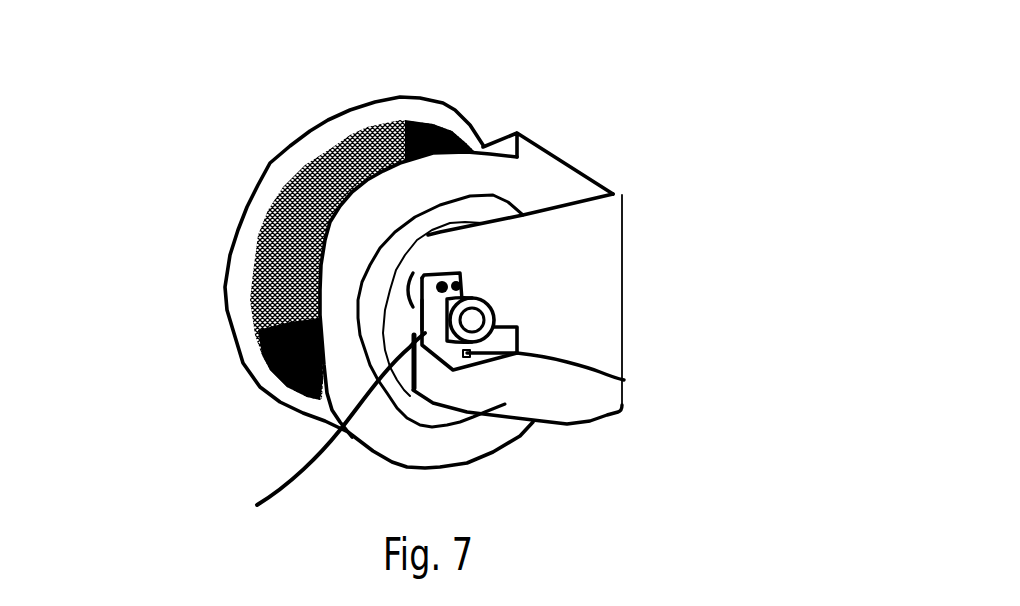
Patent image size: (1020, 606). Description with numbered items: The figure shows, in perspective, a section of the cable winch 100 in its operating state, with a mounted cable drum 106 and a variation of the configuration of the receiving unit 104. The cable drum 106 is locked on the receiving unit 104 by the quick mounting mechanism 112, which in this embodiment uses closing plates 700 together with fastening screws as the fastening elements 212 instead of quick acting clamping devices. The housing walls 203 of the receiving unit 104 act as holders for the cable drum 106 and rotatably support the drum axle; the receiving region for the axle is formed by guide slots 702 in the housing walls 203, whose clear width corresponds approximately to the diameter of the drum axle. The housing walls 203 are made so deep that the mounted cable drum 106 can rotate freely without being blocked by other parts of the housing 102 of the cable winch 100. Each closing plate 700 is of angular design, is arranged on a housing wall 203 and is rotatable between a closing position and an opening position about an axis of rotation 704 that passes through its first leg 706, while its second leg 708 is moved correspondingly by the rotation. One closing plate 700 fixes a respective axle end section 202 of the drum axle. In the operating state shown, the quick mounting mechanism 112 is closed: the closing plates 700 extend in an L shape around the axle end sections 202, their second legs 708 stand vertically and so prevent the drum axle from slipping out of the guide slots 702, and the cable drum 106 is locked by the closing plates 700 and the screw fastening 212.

The cable winch 100 is at (288, 238).
The housing 102 is at (570, 168).
The receiving unit 104 is at (388, 318).
The cable drum 106 is at (322, 98).
The quick mounting mechanism 112 is at (506, 279).
The axle end section 202 is at (467, 325).
The housing walls 203 is at (570, 405).
The fastening elements 212 is at (420, 303).
The closing plate 700 is at (437, 380).
The guide slots 702 is at (302, 435).
The axis of rotation 704 is at (624, 380).
The first leg 706 is at (507, 343).
The second leg 708 is at (420, 282).